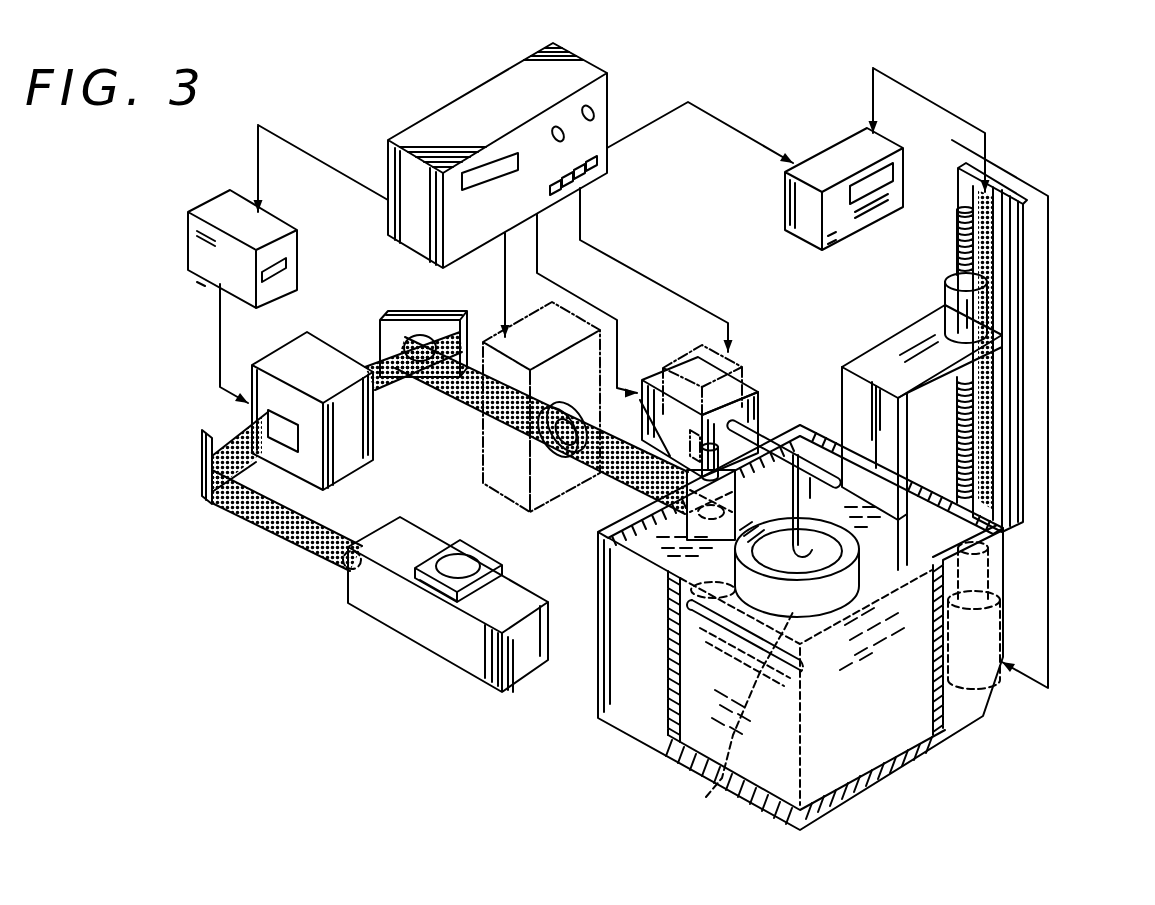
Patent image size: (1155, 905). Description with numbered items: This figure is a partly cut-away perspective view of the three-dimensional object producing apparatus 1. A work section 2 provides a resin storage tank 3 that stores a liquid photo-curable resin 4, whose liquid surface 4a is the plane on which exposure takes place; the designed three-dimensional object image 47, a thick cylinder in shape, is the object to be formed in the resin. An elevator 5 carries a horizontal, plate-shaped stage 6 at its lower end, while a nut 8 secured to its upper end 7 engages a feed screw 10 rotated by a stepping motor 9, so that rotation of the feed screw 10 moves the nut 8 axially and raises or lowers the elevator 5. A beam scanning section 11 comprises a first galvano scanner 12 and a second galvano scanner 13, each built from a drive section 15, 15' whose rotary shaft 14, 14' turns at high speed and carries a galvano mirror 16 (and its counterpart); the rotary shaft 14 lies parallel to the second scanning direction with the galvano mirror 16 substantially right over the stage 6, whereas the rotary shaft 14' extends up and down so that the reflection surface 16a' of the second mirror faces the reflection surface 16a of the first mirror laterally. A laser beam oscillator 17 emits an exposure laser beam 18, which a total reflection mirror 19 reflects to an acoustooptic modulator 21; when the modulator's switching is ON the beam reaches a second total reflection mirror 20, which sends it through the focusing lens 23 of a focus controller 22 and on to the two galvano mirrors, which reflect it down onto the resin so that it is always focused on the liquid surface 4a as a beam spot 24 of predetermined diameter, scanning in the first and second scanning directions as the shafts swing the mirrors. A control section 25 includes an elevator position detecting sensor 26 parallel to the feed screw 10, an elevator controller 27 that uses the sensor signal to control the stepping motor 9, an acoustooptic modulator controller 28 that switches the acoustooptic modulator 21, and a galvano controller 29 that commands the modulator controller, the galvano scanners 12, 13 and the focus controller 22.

The measuring apparatus 1 is at (1088, 175).
The work section 2 is at (1057, 578).
The resin storage tank 3 is at (596, 677).
The liquid photo-curable resin 4 is at (893, 735).
The liquid surface 4a is at (672, 580).
The designed three-dimensional object image 47 is at (670, 660).
The elevator 5 is at (862, 347).
The stage 6 is at (706, 797).
The upper end 7 is at (910, 335).
The nut 8 is at (950, 300).
The stepping motor 9 is at (997, 662).
The feed screw 10 is at (957, 425).
The beam scanning section 11 is at (327, 567).
The galvano scanner 12 is at (748, 392).
The galvano scanner 13 is at (722, 320).
The rotary shaft 14 is at (783, 413).
The rotary shaft 14' is at (649, 433).
The drive section 15 is at (777, 369).
The drive section 15' is at (685, 355).
The galvano mirror 16 is at (797, 450).
The reflection surface 16a is at (825, 501).
The reflection surface 16a' is at (650, 505).
The laser beam oscillator 17 is at (428, 535).
The exposure laser beam 18 is at (390, 380).
The total reflection mirror 19 is at (202, 468).
The total reflection mirror 20 is at (387, 332).
The acoustooptic modulator 21 is at (378, 440).
The focus controller 22 is at (482, 422).
The focusing lens 23 is at (578, 408).
The beam spot 24 is at (826, 590).
The control section 25 is at (620, 105).
The elevator position detecting sensor 26 is at (1000, 192).
The elevator controller 27 is at (820, 153).
The acoustooptic modulator controller 28 is at (302, 253).
The galvano controller 29 is at (440, 108).